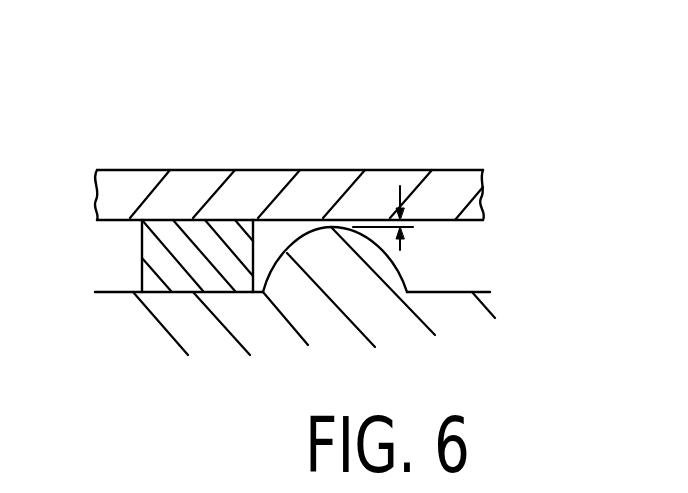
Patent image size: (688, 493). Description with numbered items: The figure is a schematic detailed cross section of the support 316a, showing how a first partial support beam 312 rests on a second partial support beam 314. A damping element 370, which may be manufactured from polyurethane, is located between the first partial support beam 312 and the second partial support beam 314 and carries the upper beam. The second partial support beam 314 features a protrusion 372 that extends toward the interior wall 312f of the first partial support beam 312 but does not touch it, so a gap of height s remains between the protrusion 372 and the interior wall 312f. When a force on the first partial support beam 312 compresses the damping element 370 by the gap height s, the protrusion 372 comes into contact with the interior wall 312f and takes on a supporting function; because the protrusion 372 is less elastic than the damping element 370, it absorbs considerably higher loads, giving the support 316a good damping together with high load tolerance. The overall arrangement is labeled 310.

The contact assembly 310 is at (178, 126).
The first partial support beam 312 is at (378, 186).
The interior wall of the first partial support beam 312f is at (433, 226).
The second partial support beam 314 is at (140, 318).
The support 316a is at (435, 255).
The damping element 370 is at (152, 256).
The protrusion 372 is at (350, 272).